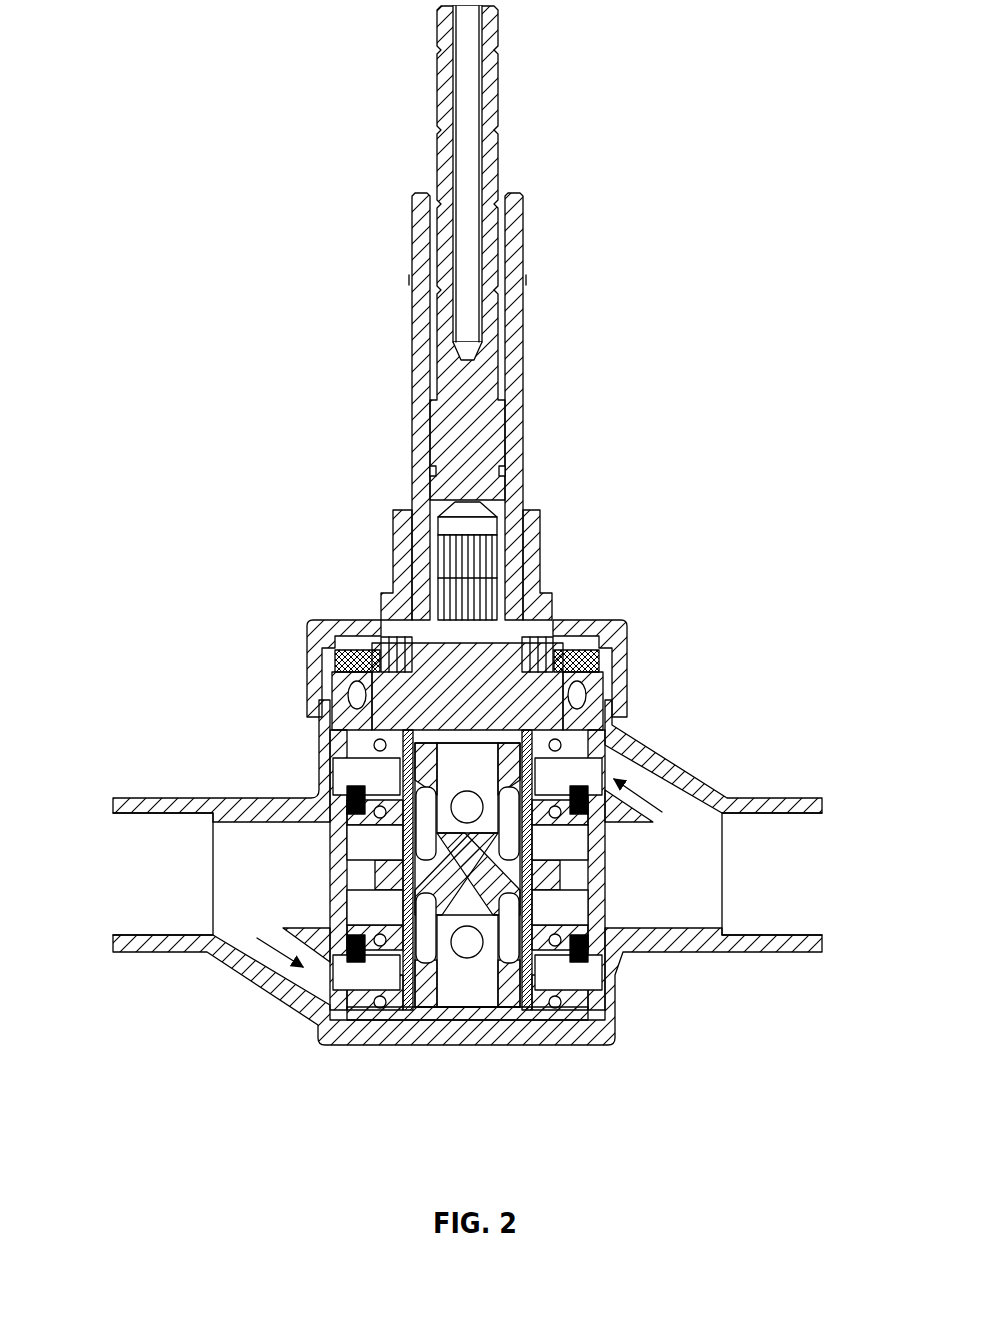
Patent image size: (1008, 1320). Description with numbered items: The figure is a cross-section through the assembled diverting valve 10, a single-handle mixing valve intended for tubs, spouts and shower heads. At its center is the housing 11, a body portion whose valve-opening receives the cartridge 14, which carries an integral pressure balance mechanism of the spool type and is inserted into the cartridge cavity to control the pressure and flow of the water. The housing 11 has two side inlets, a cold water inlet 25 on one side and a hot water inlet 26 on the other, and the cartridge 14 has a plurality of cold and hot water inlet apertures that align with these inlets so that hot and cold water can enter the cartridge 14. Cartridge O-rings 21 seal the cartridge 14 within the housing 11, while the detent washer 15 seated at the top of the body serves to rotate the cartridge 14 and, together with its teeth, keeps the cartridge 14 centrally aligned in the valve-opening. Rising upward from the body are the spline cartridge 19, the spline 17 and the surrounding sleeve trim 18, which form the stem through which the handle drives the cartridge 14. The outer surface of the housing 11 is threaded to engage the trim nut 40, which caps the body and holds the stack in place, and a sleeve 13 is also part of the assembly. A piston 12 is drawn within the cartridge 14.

The diverting valve 10 is at (270, 422).
The housing 11 is at (262, 805).
The piston 12 is at (480, 1020).
The sleeve 13 is at (527, 1020).
The cartridge 14 is at (508, 681).
The detent washer 15 is at (335, 655).
The spline 17 is at (468, 110).
The sleeve trim 18 is at (523, 373).
The spline cartridge 19 is at (470, 588).
The cartridge O-rings 21 is at (352, 700).
The cold water inlet 25 is at (817, 887).
The hot water inlet 26 is at (133, 888).
The trim nut 40 is at (627, 627).